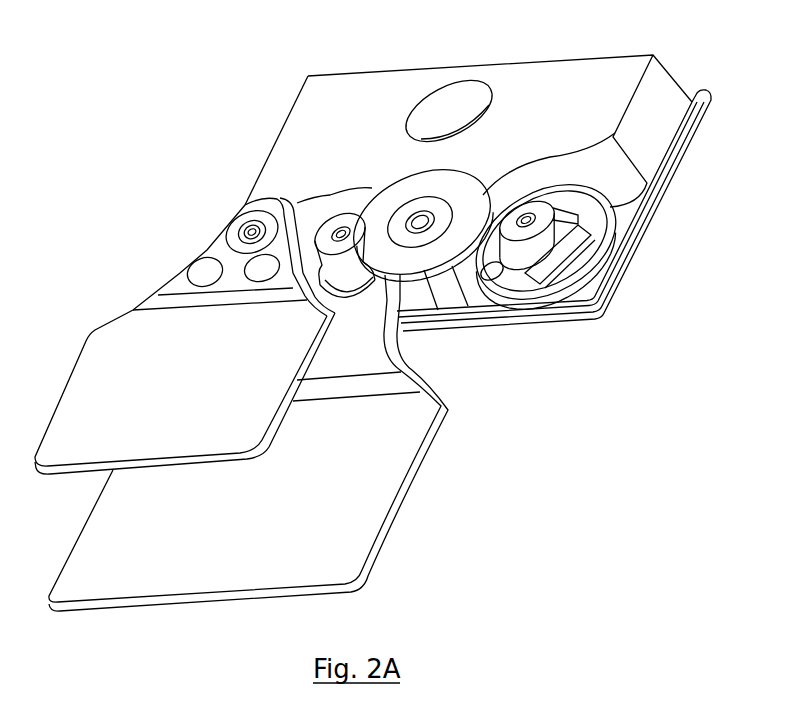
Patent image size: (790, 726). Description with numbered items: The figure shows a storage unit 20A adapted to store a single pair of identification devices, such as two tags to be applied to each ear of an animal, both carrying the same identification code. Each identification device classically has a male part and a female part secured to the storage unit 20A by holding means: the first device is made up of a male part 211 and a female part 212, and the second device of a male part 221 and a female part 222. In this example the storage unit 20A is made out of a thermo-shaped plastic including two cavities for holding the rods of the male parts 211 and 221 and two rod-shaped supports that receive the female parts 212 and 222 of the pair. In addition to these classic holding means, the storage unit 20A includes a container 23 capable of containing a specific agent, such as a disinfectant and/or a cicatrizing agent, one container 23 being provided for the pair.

The storage unit 20A is at (309, 123).
The container 23 is at (462, 98).
The male part 221 is at (440, 188).
The female part 222 is at (553, 295).
The male part 211 is at (112, 343).
The female part 212 is at (363, 500).